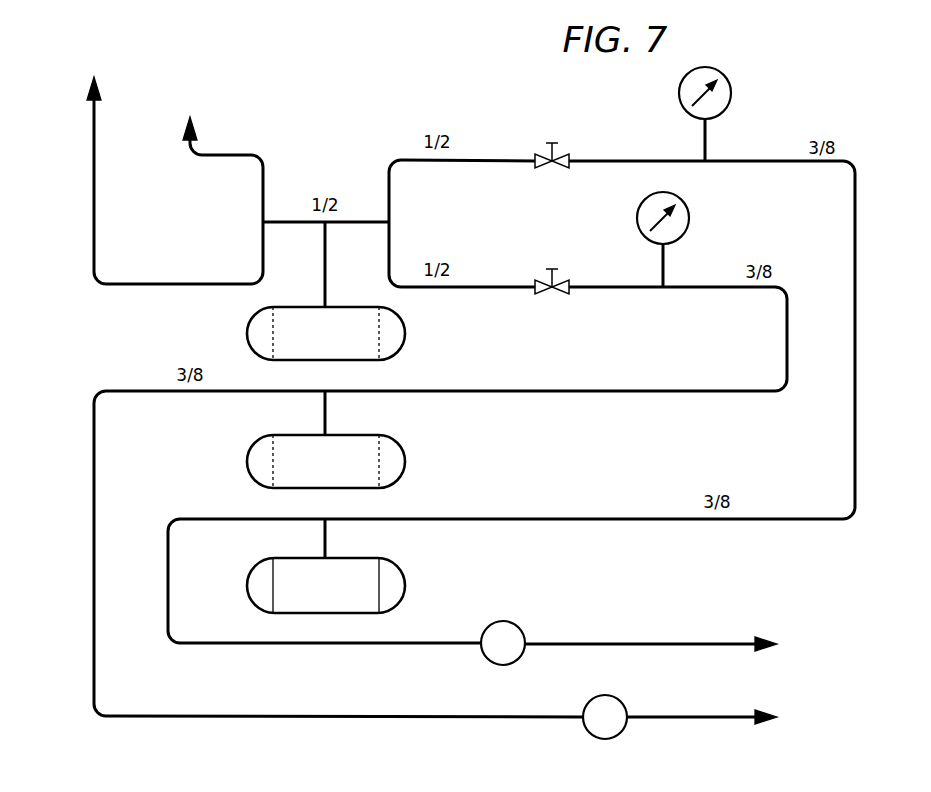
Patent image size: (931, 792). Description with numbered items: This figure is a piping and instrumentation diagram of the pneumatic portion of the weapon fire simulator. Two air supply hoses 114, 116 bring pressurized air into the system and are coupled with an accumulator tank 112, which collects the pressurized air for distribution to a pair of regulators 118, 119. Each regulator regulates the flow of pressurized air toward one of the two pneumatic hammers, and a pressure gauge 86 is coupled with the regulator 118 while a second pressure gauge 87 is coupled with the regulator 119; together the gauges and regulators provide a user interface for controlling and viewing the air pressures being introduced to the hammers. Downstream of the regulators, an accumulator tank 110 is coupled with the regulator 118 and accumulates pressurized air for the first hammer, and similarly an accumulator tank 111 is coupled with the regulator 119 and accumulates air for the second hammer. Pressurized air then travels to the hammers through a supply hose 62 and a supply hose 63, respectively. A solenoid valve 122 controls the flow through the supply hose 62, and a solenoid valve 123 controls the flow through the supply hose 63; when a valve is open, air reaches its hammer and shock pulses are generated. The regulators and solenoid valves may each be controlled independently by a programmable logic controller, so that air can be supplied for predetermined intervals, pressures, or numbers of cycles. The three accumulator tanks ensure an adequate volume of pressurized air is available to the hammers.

The air supply hose 114 is at (92, 168).
The air supply hose 116 is at (265, 172).
The pressure gauge 86 is at (680, 92).
The pressure gauge 87 is at (640, 212).
The regulator 118 is at (550, 170).
The regulator 119 is at (553, 298).
The accumulator tank 112 is at (406, 335).
The accumulator tank 111 is at (406, 460).
The accumulator tank 110 is at (406, 572).
The solenoid valve 122 is at (485, 658).
The solenoid valve 123 is at (588, 733).
The supply hose 62 is at (620, 642).
The supply hose 63 is at (678, 721).